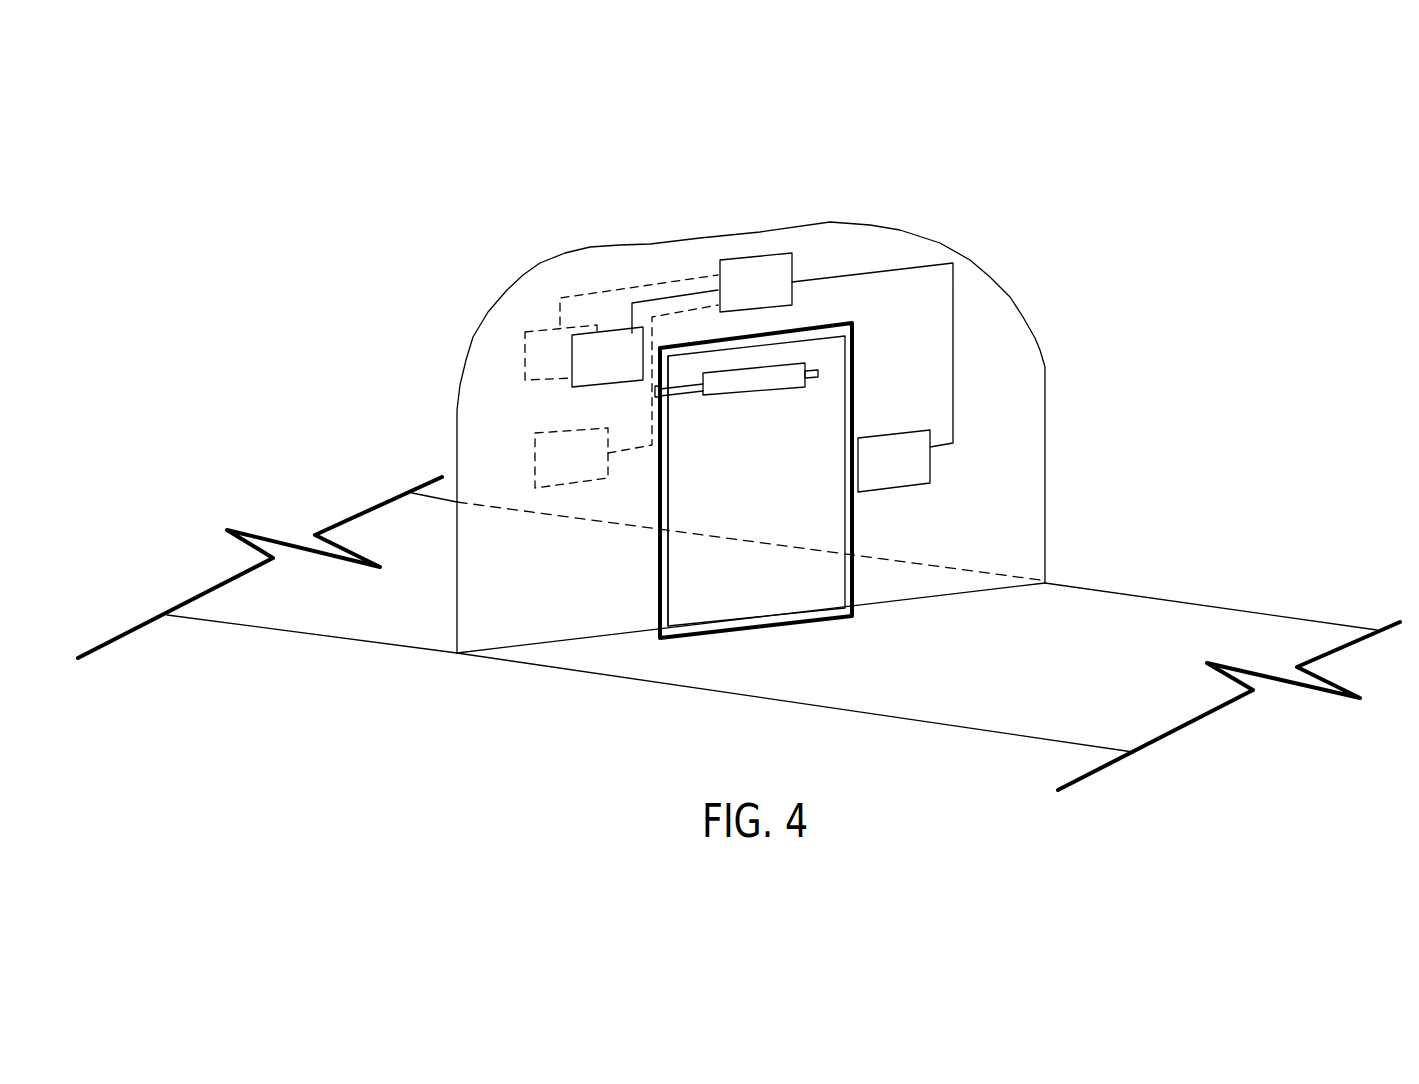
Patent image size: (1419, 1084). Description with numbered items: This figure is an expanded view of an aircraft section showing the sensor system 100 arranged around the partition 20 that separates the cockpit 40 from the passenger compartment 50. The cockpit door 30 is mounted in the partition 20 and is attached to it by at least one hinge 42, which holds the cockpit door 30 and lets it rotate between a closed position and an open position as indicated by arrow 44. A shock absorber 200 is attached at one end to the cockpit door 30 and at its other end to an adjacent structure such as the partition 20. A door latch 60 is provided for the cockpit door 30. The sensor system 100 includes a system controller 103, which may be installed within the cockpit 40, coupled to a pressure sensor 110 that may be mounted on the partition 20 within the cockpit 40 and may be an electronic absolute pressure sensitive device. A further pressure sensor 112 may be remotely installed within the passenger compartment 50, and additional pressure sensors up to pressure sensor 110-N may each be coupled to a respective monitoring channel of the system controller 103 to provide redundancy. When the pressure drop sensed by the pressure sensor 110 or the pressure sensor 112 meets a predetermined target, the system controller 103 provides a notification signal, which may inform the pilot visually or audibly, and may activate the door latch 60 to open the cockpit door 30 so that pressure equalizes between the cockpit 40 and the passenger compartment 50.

The sensor system 100 is at (733, 198).
The partition 20 is at (1005, 368).
The cockpit door 30 is at (773, 500).
The cockpit 40 is at (1077, 669).
The passenger compartment 50 is at (392, 598).
The hinge 42 is at (657, 548).
The arrow 44 is at (776, 679).
The door latch 60 is at (905, 471).
The system controller 103 is at (772, 296).
The pressure sensor 110 is at (624, 369).
The pressure sensor 110-N is at (596, 469).
The pressure sensor 112 is at (562, 365).
The shock absorber 200 is at (771, 388).